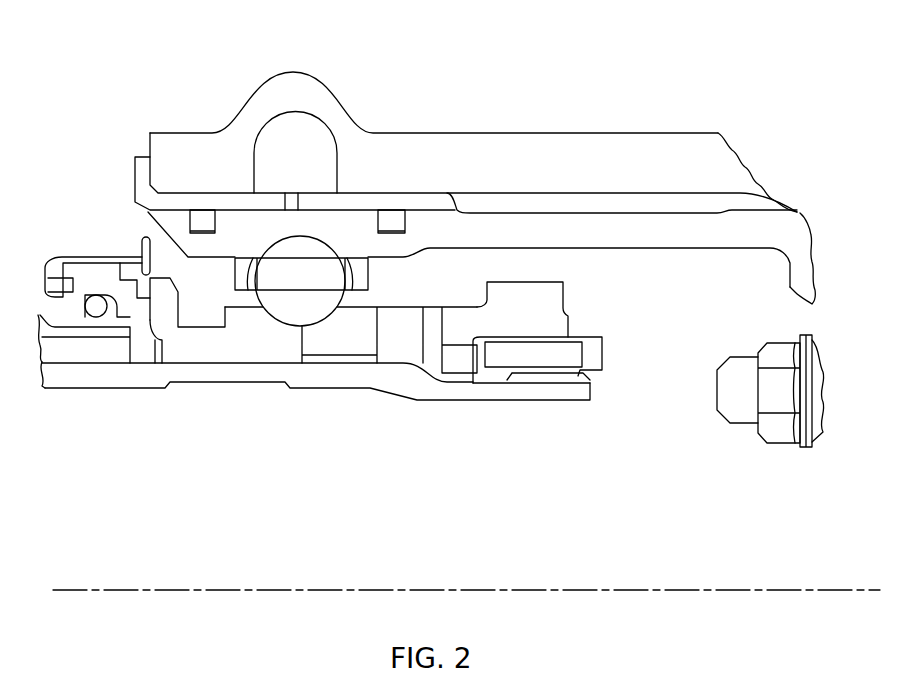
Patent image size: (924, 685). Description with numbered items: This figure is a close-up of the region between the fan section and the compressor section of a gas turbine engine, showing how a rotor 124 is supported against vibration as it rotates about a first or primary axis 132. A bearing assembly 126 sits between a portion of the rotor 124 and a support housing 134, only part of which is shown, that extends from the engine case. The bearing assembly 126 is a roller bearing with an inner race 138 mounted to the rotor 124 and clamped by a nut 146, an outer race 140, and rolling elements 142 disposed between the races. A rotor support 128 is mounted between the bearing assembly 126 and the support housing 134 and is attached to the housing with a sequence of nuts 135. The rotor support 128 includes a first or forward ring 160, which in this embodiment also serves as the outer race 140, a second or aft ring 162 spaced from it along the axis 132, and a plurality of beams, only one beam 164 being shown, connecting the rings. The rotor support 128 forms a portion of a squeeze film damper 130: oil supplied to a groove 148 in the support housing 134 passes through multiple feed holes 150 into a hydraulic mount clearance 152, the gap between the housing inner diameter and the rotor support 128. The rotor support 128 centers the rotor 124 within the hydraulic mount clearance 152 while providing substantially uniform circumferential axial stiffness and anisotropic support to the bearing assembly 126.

The rotor 124 is at (102, 377).
The bearing assembly 126 is at (97, 213).
The rotor support 128 is at (543, 232).
The squeeze film damper 130 is at (385, 175).
The first axis 132 is at (323, 590).
The support housing 134 is at (688, 115).
The nuts 135 is at (780, 427).
The inner race 138 is at (363, 345).
The outer race 140 is at (242, 225).
The rolling elements 142 is at (317, 289).
The nut 146 is at (543, 360).
The groove 148 is at (280, 123).
The feed holes 150 is at (293, 197).
The hydraulic mount clearance 152 is at (323, 207).
The first ring 160 is at (340, 223).
The second ring 162 is at (811, 235).
The beam 164 is at (656, 238).